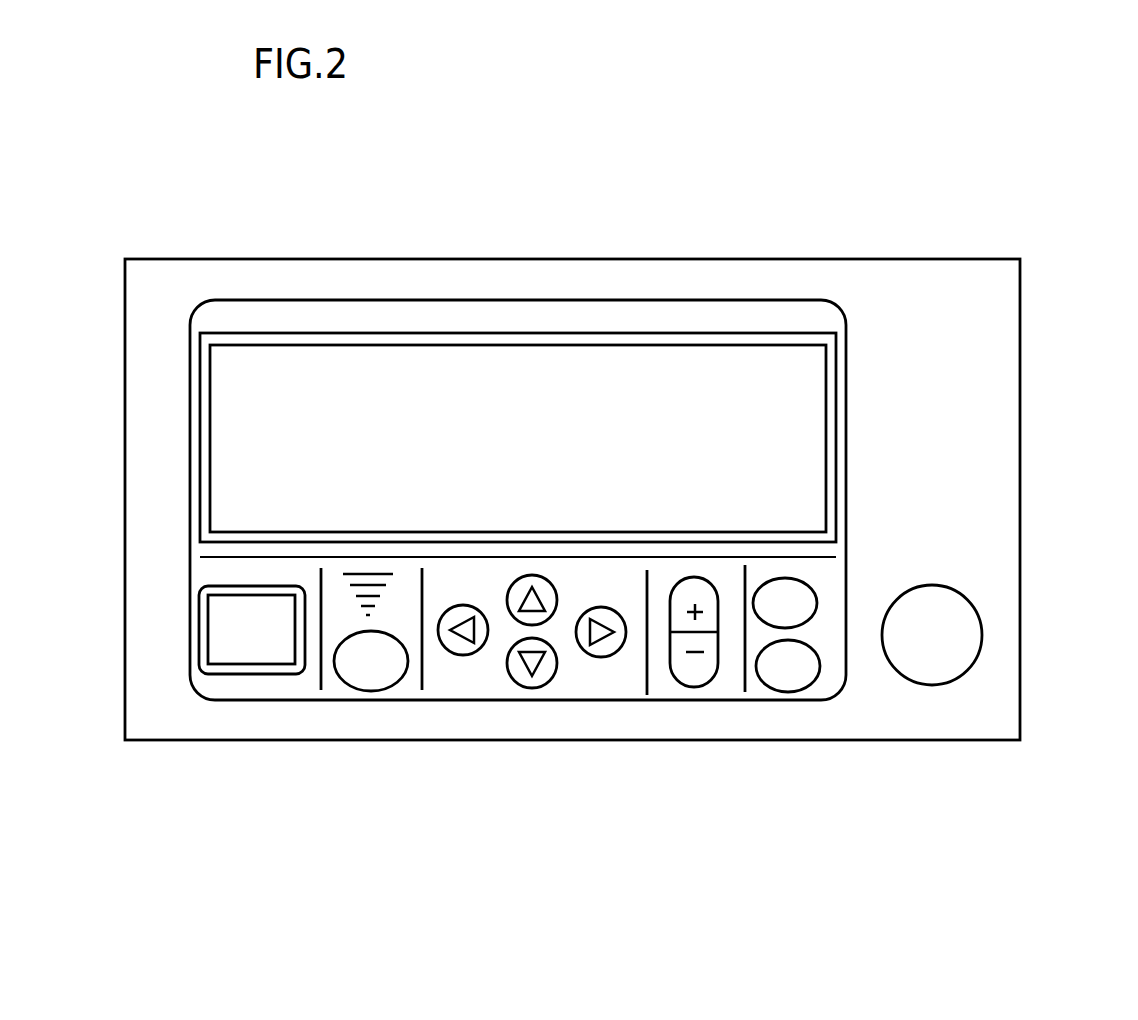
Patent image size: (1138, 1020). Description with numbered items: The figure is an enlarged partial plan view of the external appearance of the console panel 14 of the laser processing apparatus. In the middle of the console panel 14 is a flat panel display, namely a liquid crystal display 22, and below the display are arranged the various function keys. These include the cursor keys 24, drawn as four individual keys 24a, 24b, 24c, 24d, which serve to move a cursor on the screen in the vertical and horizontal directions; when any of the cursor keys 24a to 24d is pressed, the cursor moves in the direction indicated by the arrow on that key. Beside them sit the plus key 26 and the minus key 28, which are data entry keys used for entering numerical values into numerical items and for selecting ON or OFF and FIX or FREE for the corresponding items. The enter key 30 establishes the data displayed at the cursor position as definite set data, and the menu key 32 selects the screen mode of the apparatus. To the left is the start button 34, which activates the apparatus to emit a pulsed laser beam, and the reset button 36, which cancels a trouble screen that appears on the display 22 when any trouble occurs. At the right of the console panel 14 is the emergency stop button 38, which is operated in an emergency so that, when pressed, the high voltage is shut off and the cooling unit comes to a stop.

The console panel 14 is at (917, 260).
The liquid crystal display 22 is at (500, 358).
The cursor keys 24 is at (509, 693).
The cursor key 24a is at (528, 575).
The cursor key 24b is at (455, 650).
The cursor key 24c is at (545, 685).
The cursor key 24d is at (605, 655).
The plus key 26 is at (692, 721).
The minus key 28 is at (698, 675).
The enter key 30 is at (792, 688).
The menu key 32 is at (800, 620).
The start button 34 is at (238, 655).
The reset button 36 is at (366, 680).
The emergency stop button 38 is at (970, 648).